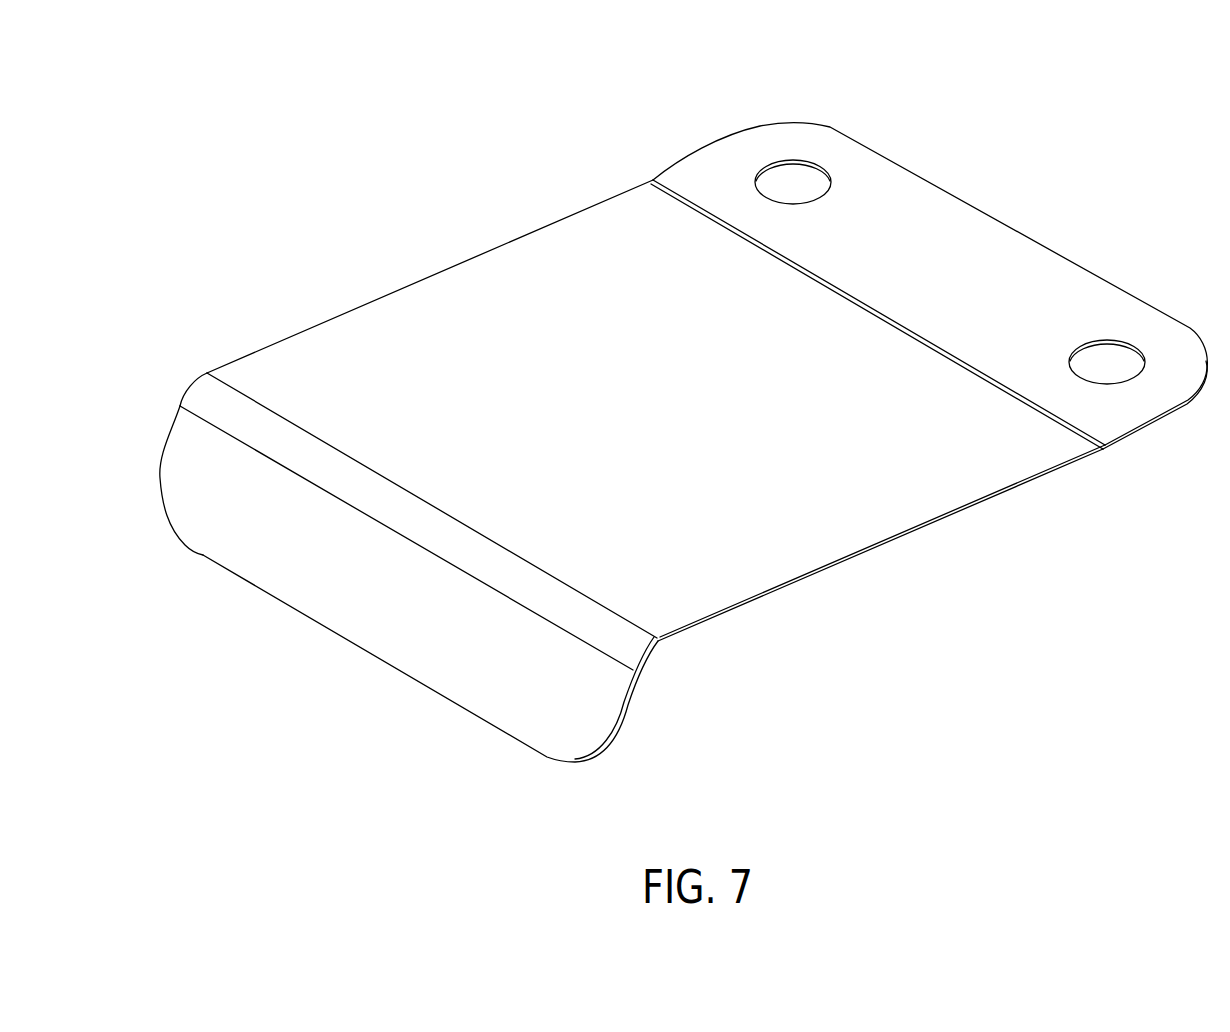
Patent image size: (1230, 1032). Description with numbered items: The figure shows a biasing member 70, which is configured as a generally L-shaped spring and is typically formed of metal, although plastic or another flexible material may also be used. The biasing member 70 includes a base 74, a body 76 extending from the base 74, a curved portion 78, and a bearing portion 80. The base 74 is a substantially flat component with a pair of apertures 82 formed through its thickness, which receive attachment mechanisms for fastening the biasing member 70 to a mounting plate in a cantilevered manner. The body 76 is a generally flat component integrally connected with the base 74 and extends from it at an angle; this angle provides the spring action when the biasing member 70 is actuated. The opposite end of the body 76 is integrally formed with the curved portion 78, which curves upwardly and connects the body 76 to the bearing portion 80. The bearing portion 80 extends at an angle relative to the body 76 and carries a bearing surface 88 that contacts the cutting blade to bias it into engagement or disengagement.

The biasing member 70 is at (601, 113).
The base 74 is at (1130, 403).
The body 76 is at (842, 528).
The curved portion 78 is at (633, 643).
The bearing portion 80 is at (505, 700).
The apertures 82 is at (803, 178).
The bearing surface 88 is at (411, 640).